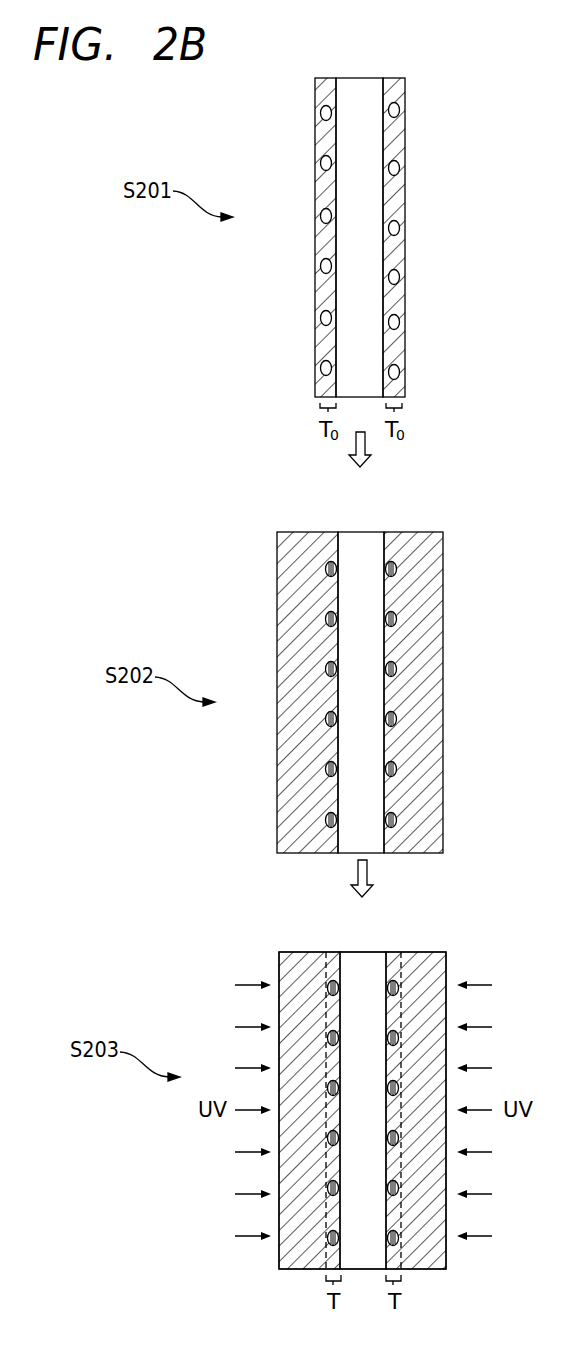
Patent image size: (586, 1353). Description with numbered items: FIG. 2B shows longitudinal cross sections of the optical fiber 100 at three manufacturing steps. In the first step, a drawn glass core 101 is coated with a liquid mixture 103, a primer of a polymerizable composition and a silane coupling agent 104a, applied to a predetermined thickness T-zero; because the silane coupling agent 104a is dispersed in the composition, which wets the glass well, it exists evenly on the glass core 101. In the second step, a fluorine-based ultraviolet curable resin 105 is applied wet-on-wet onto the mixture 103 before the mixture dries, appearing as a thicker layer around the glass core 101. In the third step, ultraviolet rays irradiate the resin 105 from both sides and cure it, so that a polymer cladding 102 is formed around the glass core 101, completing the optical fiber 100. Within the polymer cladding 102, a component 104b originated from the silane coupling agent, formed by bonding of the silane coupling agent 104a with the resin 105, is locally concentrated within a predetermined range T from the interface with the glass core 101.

The optical fiber 100 is at (470, 945).
The glass core 101 is at (351, 88).
The polymer cladding 102 is at (306, 964).
The mixture 103 is at (394, 88).
The silane coupling agent (B) 104a is at (400, 111).
The component originated from the silane coupling agent 104b is at (398, 568).
The fluorine-based ultraviolet curable resin (C) 105 is at (304, 544).